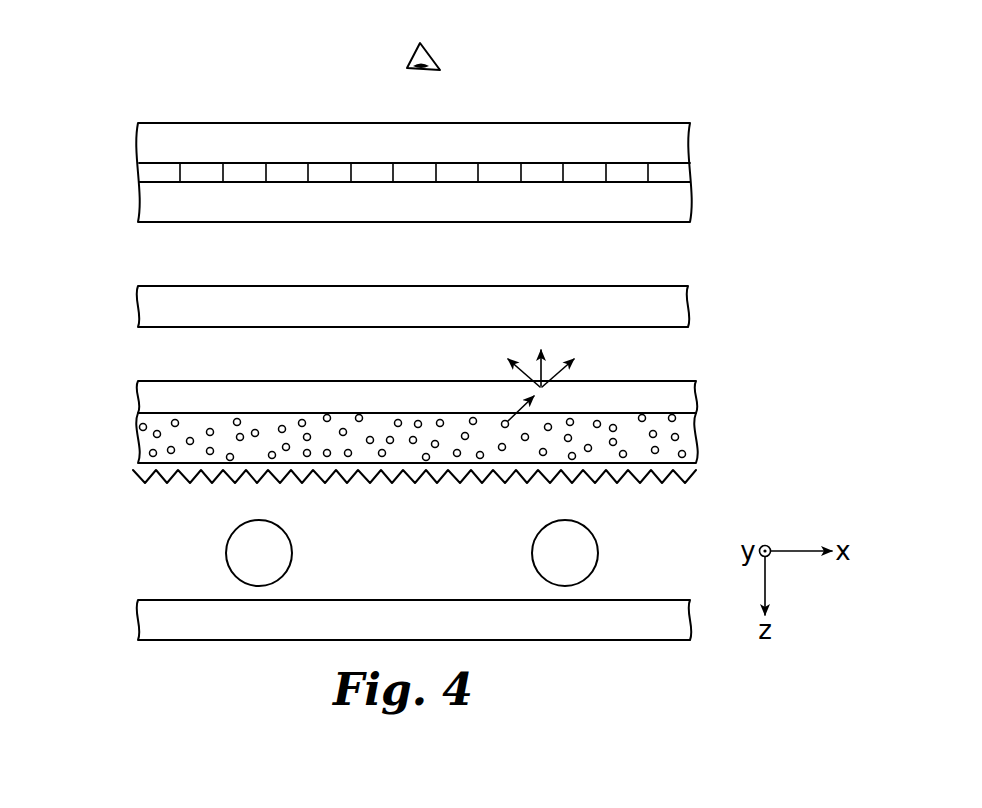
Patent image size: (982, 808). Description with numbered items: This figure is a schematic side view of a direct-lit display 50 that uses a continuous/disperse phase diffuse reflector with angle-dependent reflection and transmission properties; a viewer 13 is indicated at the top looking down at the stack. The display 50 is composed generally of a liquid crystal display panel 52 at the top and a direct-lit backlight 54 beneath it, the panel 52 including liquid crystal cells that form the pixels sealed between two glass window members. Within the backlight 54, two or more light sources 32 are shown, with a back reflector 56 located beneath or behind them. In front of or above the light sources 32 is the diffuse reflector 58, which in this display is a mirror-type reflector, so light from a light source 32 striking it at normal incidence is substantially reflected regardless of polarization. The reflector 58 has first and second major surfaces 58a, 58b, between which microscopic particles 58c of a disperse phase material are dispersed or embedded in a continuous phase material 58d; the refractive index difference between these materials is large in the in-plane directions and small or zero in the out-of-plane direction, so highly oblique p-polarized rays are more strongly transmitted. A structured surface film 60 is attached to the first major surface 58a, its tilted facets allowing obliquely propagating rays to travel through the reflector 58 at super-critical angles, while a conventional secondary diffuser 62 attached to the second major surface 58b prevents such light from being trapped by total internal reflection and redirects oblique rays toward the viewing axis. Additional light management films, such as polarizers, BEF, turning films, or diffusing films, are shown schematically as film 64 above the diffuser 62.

The viewer / eye 13 is at (431, 54).
The direct-lit display 50 is at (620, 98).
The liquid crystal display panel 52 is at (107, 122).
The direct-lit backlight 54 is at (107, 283).
The back reflector 56 is at (400, 610).
The diffuse reflector 58 is at (695, 437).
The first major surface 58a is at (229, 461).
The second major surface 58b is at (162, 410).
The microscopic particles 58c is at (190, 445).
The continuous phase material 58d is at (195, 424).
The structured surface film 60 is at (697, 468).
The secondary diffuser 62 is at (695, 400).
The film 64 is at (685, 303).
The light sources 32 is at (244, 567).